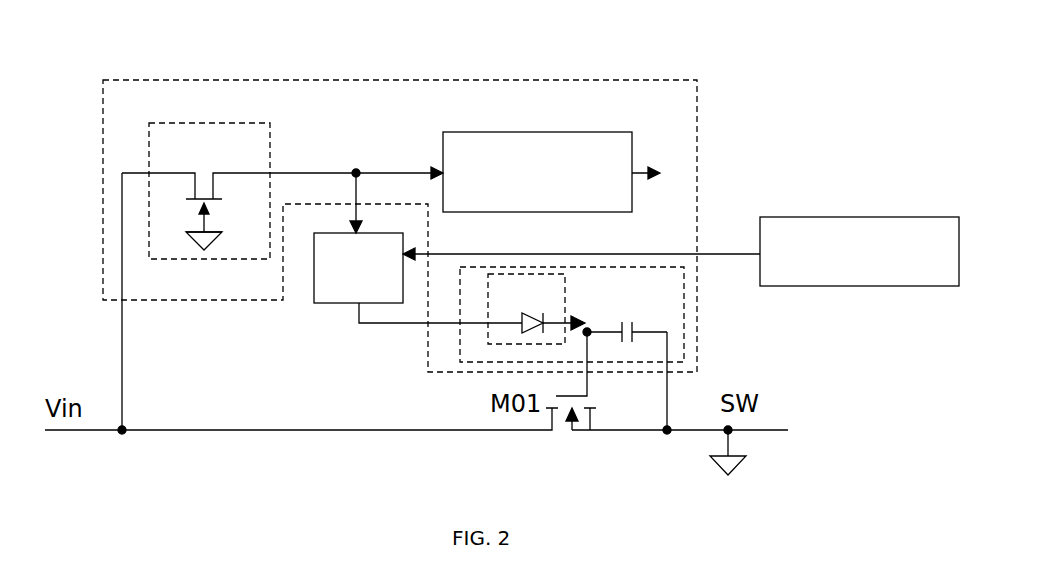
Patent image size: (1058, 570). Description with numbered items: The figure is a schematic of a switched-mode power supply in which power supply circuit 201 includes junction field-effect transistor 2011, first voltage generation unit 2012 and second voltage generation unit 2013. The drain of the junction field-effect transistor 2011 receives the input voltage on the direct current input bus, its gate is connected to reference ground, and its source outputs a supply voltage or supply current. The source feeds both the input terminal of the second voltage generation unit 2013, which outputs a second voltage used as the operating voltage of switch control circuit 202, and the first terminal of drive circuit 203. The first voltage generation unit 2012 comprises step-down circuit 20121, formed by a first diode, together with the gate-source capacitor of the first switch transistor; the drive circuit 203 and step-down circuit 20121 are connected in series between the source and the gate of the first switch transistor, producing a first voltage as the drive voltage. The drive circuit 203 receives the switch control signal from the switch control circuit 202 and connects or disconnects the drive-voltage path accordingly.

The power supply circuit 201 is at (392, 80).
The junction field-effect transistor 2011 is at (243, 123).
The second voltage generation unit 2013 is at (487, 132).
The drive circuit 203 is at (314, 281).
The first voltage generation unit 2012 is at (521, 311).
The step-down circuit 20121 is at (503, 274).
The switch control circuit 202 is at (818, 217).